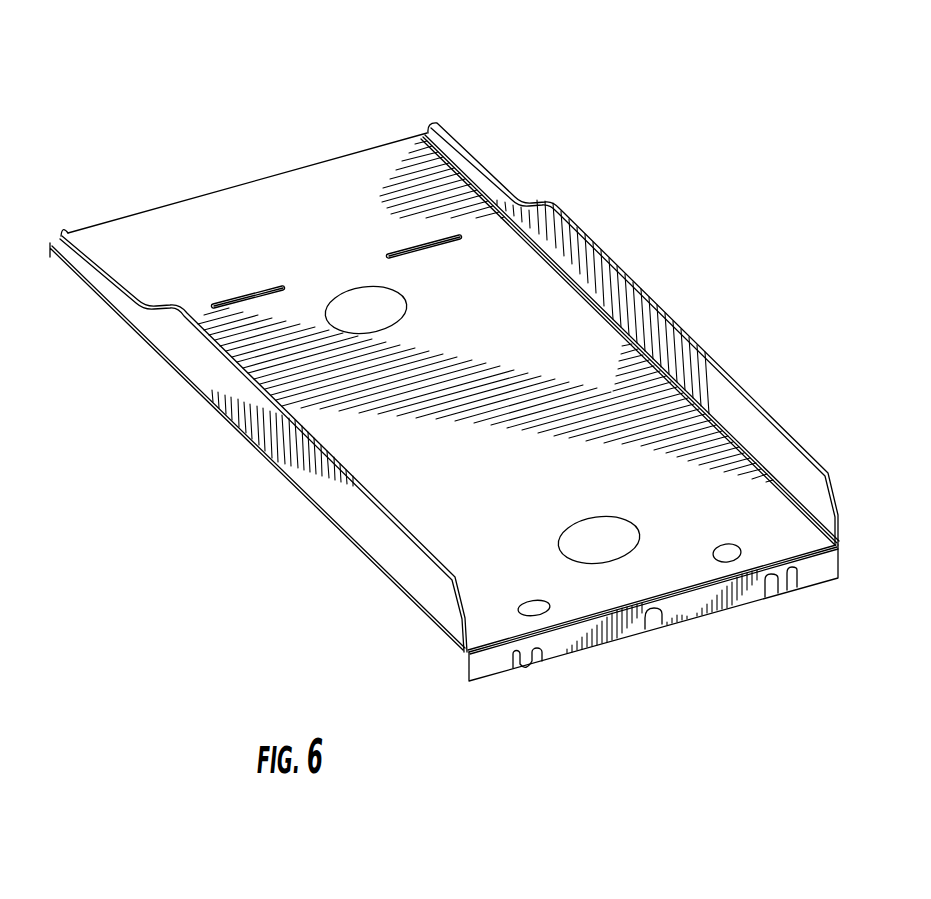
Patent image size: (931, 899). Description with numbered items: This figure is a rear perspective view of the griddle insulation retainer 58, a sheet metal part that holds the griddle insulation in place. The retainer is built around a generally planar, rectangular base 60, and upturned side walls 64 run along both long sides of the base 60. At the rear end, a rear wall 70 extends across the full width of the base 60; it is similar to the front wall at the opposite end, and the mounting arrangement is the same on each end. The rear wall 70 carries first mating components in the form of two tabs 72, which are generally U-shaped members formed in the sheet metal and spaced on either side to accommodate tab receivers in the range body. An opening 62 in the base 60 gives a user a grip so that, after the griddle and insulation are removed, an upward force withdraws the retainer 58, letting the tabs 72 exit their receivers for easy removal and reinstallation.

The griddle insulation retainer 58 is at (444, 387).
The base 60 is at (650, 572).
The opening 62 is at (385, 310).
The side walls 64 is at (192, 345).
The rear wall 70 is at (488, 667).
The tabs 72 is at (526, 658).